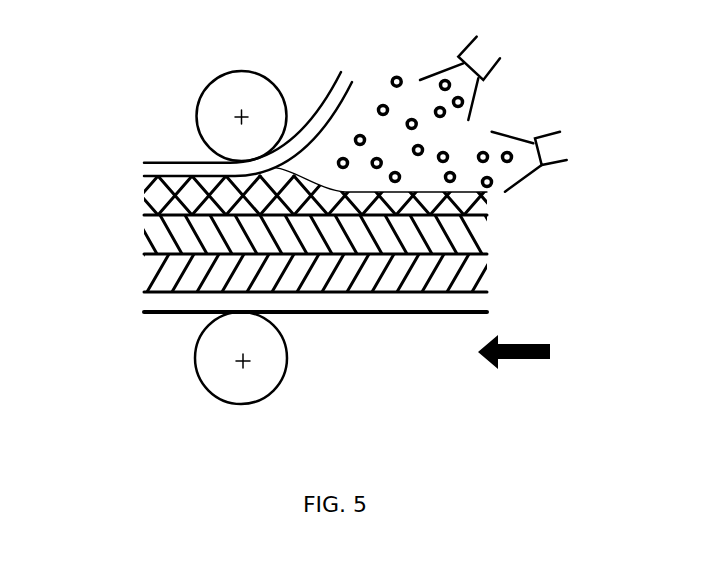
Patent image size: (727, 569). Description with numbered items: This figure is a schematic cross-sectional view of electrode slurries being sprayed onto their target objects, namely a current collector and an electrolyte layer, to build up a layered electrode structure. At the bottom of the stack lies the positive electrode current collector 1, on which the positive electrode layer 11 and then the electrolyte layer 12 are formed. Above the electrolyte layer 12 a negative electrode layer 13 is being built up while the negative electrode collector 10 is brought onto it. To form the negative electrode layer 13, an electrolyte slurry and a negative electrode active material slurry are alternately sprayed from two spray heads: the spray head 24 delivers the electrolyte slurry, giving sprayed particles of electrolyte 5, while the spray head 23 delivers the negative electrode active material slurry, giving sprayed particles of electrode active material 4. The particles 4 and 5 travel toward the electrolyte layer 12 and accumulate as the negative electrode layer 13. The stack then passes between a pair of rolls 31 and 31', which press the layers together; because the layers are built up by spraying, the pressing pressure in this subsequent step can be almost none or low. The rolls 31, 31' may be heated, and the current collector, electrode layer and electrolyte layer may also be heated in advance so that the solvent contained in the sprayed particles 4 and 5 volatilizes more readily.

The positive electrode collector 1 is at (147, 303).
The negative electrode collector 10 is at (202, 168).
The positive electrode layer 11 is at (140, 280).
The electrolyte layer 12 is at (140, 240).
The negative electrode layer 13 is at (137, 202).
The sprayed particle of electrode active material 4 is at (408, 118).
The sprayed particles of electrolyte 5 is at (495, 182).
The spray head 23 is at (478, 43).
The spray head 24 is at (553, 147).
The roll 31 is at (274, 358).
The roll 31' is at (211, 111).